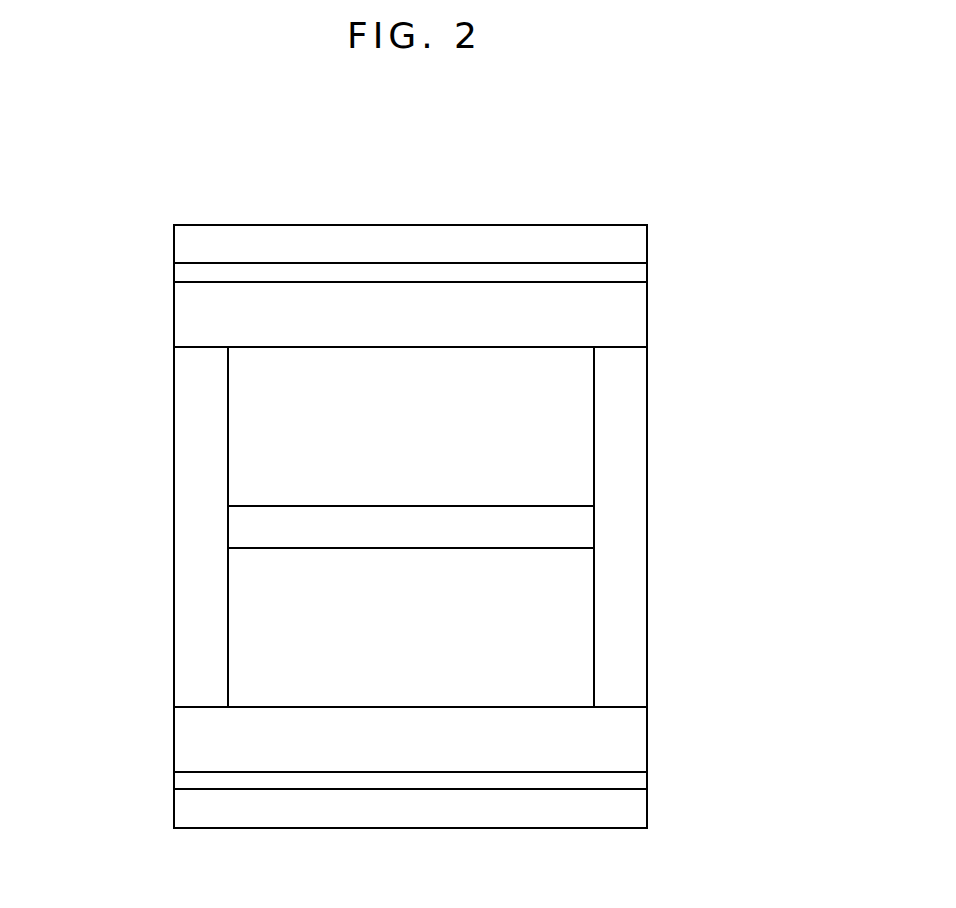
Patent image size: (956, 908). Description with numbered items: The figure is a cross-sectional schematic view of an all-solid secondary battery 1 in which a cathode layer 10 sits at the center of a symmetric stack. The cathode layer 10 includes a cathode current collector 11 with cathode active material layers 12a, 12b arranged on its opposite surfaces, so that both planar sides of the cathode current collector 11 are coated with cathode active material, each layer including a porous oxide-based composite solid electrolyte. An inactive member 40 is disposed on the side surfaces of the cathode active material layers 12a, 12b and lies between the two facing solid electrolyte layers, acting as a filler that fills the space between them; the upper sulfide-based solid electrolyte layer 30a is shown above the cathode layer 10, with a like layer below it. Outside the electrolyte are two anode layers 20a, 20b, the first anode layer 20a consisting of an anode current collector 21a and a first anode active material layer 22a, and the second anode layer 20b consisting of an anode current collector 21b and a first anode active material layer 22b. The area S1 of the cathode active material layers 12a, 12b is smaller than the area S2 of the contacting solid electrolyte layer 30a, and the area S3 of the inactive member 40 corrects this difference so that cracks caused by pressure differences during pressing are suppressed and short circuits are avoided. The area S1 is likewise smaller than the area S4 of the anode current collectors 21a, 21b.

The all-solid secondary battery 1 is at (736, 148).
The cathode layer 10 is at (512, 527).
The cathode current collector 11 is at (560, 527).
The cathode active material layer 12a is at (560, 455).
The cathode active material layer 12b is at (489, 627).
The anode layer 20a is at (491, 260).
The anode current collector 21a is at (643, 243).
The first anode active material layer 22a is at (643, 277).
The anode layer 20b is at (492, 795).
The anode current collector 21b is at (643, 810).
The first anode active material layer 22b is at (643, 780).
The solid electrolyte layer 30a is at (627, 314).
The inactive member 40 is at (627, 392).
The area of the cathode active material layer S1 is at (298, 347).
The area of the solid electrolyte layer S2 is at (320, 347).
The area of the inactive member S3 is at (200, 347).
The area of the anode current collector S4 is at (218, 225).